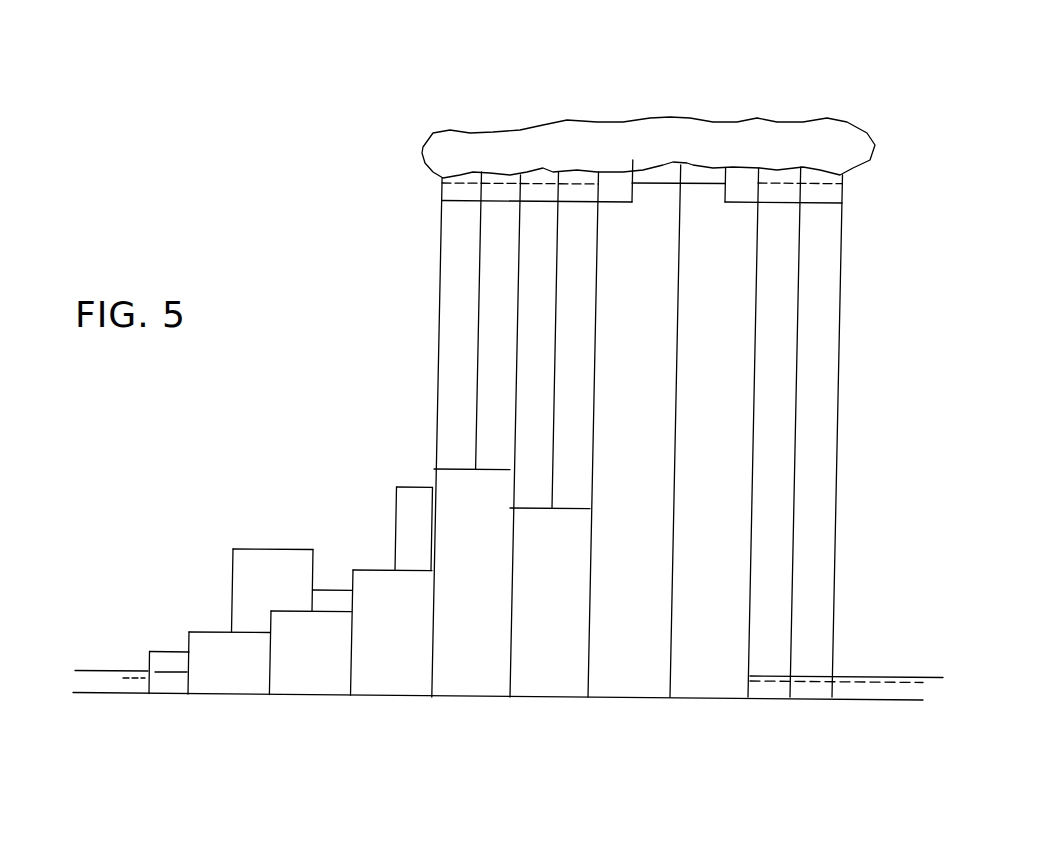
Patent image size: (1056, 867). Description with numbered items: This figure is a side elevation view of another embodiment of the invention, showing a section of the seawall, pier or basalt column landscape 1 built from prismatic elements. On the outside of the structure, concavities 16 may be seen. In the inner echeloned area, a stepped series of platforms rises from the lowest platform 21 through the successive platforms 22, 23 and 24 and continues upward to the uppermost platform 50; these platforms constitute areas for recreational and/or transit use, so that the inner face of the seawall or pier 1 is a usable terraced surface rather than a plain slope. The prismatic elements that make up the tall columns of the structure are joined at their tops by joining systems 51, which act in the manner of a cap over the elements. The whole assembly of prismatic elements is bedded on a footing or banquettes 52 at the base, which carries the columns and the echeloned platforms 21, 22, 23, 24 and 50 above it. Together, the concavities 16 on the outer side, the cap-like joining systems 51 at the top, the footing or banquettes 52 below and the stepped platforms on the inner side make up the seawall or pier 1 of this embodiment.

The seawall or pier 1 is at (709, 469).
The concavities 16 is at (768, 689).
The platform 21 is at (169, 652).
The platform 22 is at (216, 632).
The platform 23 is at (328, 611).
The platform 24 is at (367, 570).
The platform 50 is at (700, 169).
The joining systems 51 is at (501, 190).
The footing or banquettes 52 is at (767, 728).